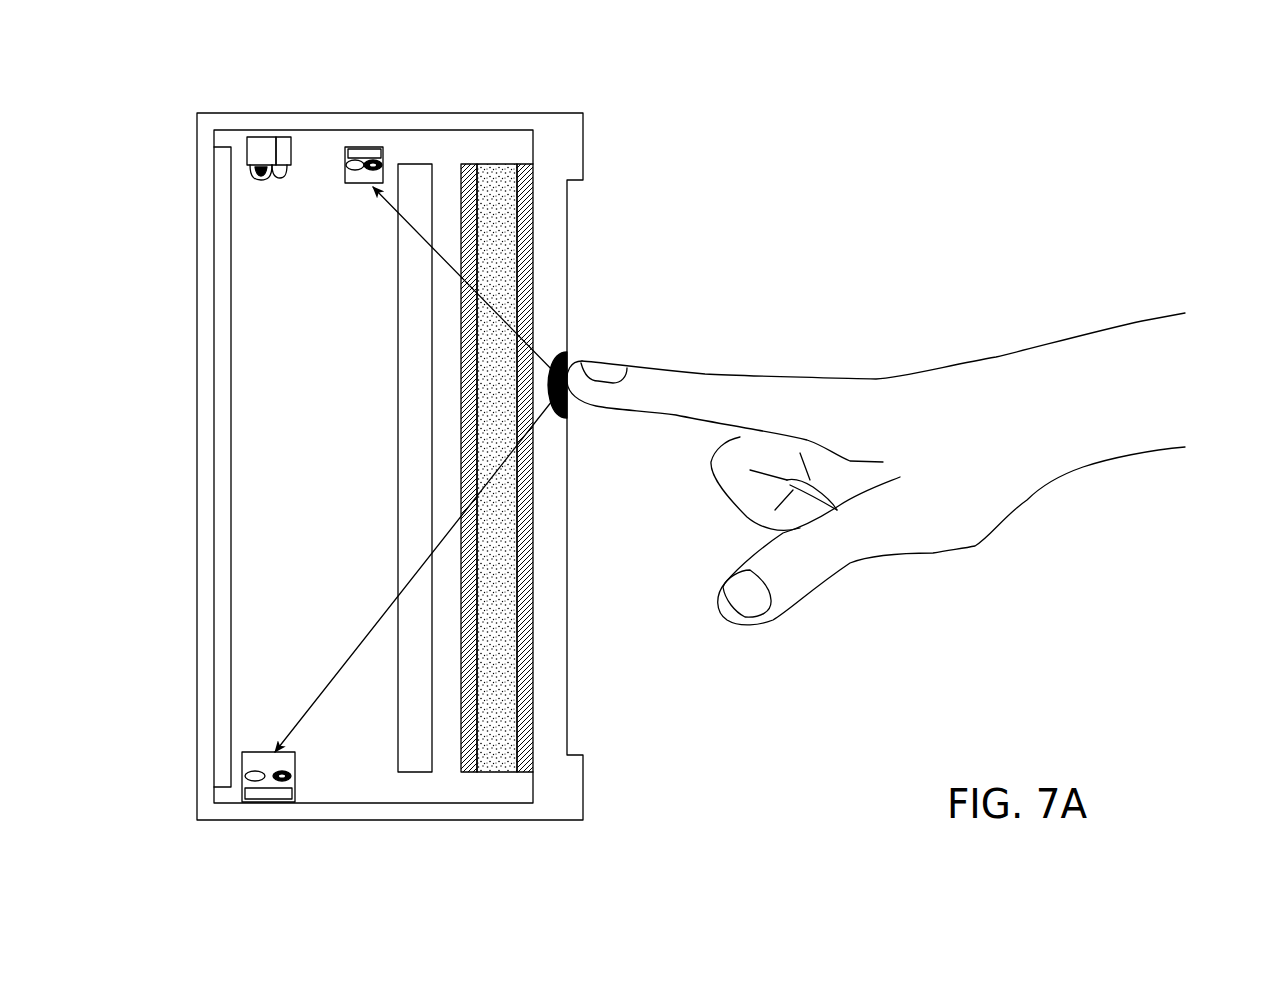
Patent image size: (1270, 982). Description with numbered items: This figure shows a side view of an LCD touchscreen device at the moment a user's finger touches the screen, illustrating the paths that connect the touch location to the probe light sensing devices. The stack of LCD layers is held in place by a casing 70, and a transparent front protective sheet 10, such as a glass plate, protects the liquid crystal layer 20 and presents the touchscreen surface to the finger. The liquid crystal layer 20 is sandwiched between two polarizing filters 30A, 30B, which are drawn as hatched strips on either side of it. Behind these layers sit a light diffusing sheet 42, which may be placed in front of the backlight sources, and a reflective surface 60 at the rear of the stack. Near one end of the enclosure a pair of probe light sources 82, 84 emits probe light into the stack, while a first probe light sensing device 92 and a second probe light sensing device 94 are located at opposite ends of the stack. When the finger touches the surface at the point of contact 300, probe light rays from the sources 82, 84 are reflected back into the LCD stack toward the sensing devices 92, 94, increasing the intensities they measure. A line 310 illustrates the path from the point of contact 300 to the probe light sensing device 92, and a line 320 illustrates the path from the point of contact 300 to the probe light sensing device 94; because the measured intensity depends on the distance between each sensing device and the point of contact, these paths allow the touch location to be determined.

The transparent front protective sheet 10 is at (567, 735).
The liquid crystal layer 20 is at (497, 468).
The polarizing filter 30A is at (517, 164).
The polarizing filter 30B is at (467, 164).
The light diffusing sheet 42 is at (415, 468).
The reflective surface 60 is at (225, 605).
The casing 70 is at (198, 572).
The probe light source 82 is at (283, 145).
The probe light source 84 is at (264, 147).
The probe light sensing device 92 is at (363, 147).
The probe light sensing device 94 is at (273, 803).
The point of contact 300 is at (566, 396).
The line 310 is at (388, 205).
The line 320 is at (337, 668).